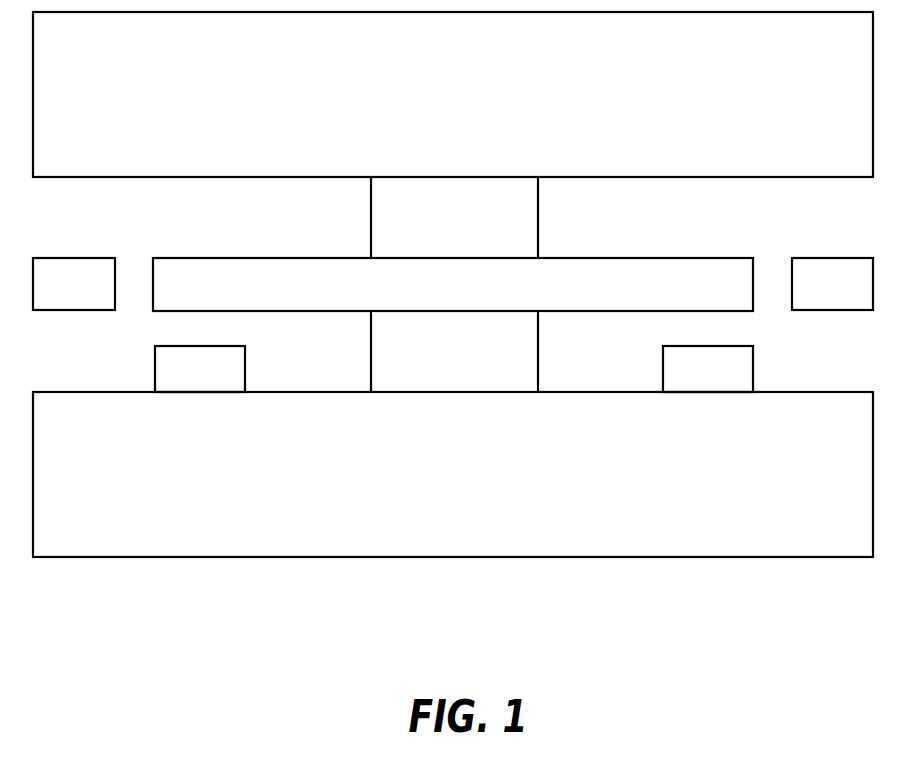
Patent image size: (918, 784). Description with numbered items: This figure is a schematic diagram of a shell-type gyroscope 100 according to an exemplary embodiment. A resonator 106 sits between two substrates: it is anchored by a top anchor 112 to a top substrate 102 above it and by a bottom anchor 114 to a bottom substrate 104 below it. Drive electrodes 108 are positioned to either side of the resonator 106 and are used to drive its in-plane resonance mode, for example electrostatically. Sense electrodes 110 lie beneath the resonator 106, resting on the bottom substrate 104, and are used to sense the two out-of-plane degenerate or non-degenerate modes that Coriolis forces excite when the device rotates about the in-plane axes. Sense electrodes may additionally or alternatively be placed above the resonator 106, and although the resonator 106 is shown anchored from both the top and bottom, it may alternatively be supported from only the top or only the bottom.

The shell-type gyroscope 100 is at (620, 629).
The top substrate 102 is at (477, 130).
The bottom substrate 104 is at (465, 518).
The resonator 106 is at (637, 297).
The drive electrodes 108 is at (83, 257).
The sense electrodes 110 is at (154, 363).
The top anchor 112 is at (474, 247).
The bottom anchor 114 is at (474, 378).